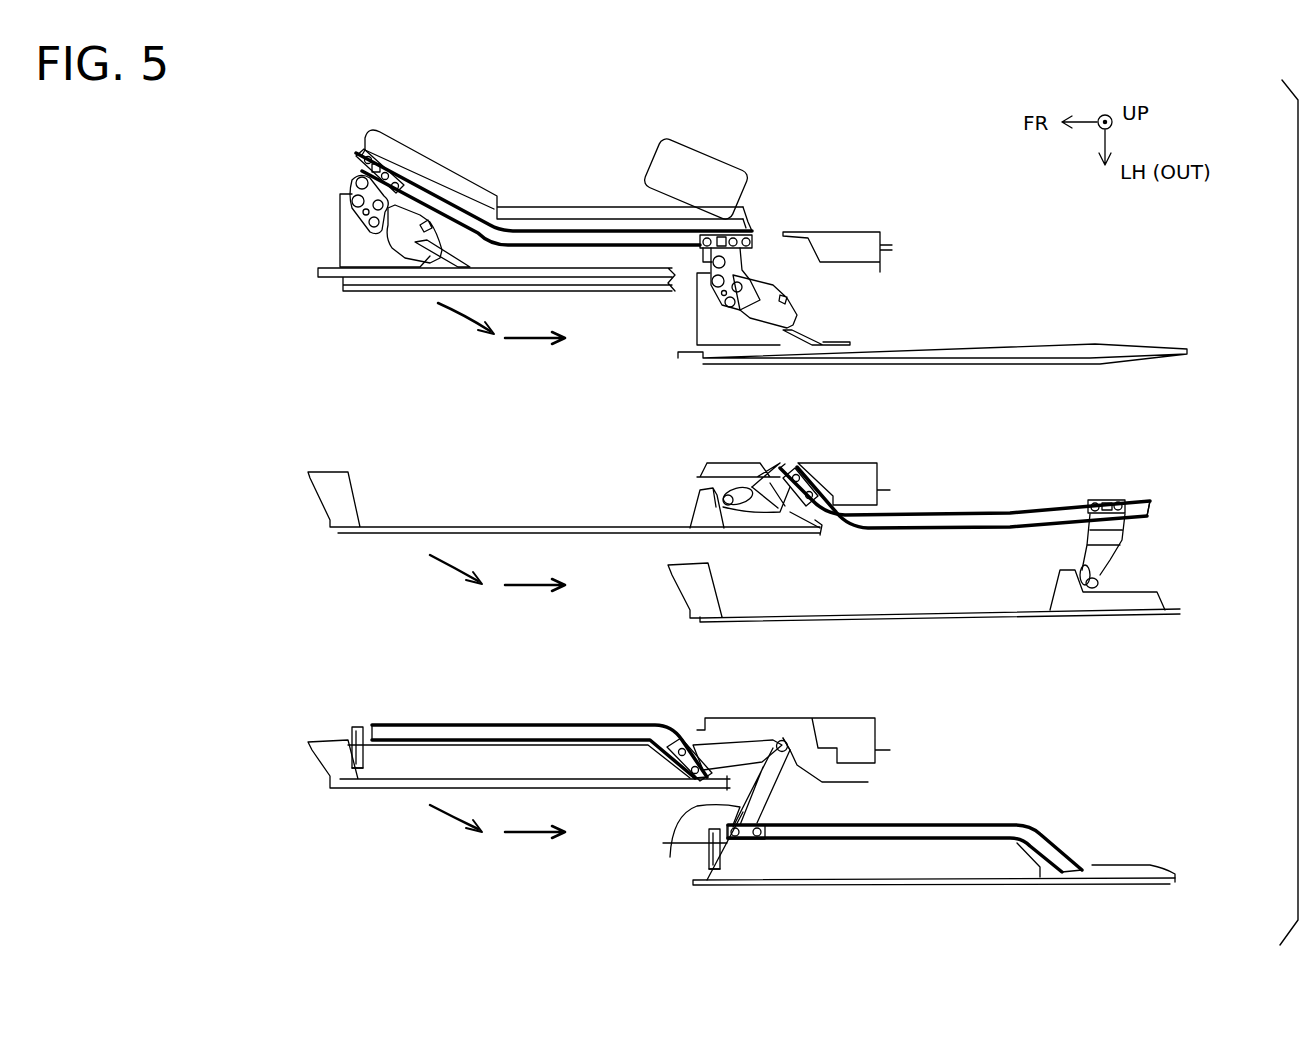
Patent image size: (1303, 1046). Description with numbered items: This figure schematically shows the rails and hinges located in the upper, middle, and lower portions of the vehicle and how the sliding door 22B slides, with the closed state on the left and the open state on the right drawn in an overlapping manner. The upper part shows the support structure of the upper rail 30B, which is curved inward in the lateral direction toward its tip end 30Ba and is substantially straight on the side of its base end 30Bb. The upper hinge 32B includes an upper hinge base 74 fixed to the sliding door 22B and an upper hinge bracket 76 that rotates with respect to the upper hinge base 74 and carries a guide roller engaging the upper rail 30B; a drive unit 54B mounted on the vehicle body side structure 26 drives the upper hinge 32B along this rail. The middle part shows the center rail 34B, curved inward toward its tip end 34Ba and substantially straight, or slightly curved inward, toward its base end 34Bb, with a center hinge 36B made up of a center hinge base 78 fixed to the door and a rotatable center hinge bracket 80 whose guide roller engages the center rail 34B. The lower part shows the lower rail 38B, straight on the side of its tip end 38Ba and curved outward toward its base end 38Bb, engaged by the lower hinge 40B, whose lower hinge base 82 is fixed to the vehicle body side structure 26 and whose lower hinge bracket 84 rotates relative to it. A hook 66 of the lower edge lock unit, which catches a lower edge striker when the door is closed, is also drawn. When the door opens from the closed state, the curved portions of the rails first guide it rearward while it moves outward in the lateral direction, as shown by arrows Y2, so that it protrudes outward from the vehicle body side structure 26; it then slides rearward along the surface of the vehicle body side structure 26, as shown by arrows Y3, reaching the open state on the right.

The sliding door 22B is at (415, 293).
The vehicle body side structure 26 is at (848, 230).
The upper rail 30B is at (498, 212).
The tip end of upper rail 30Ba is at (366, 150).
The base end of upper rail 30Bb is at (745, 238).
The upper hinge 32B is at (323, 198).
The center rail 34B is at (935, 525).
The tip end of center rail 34Ba is at (797, 465).
The base end of center rail 34Bb is at (1152, 503).
The center hinge 36B is at (751, 465).
The lower rail 38B is at (490, 724).
The tip end of lower rail 38Ba is at (372, 724).
The base end of lower rail 38Bb is at (708, 776).
The lower hinge 40B is at (808, 799).
The drive unit 54B is at (610, 215).
The hook 66 is at (355, 765).
The upper hinge base 74 is at (338, 236).
The upper hinge bracket 76 is at (345, 172).
The center hinge base 78 is at (700, 500).
The center hinge bracket 80 is at (780, 465).
The lower hinge base 82 is at (780, 742).
The lower hinge bracket 84 is at (722, 745).
The arrows Y2 is at (452, 338).
The arrows Y3 is at (538, 348).